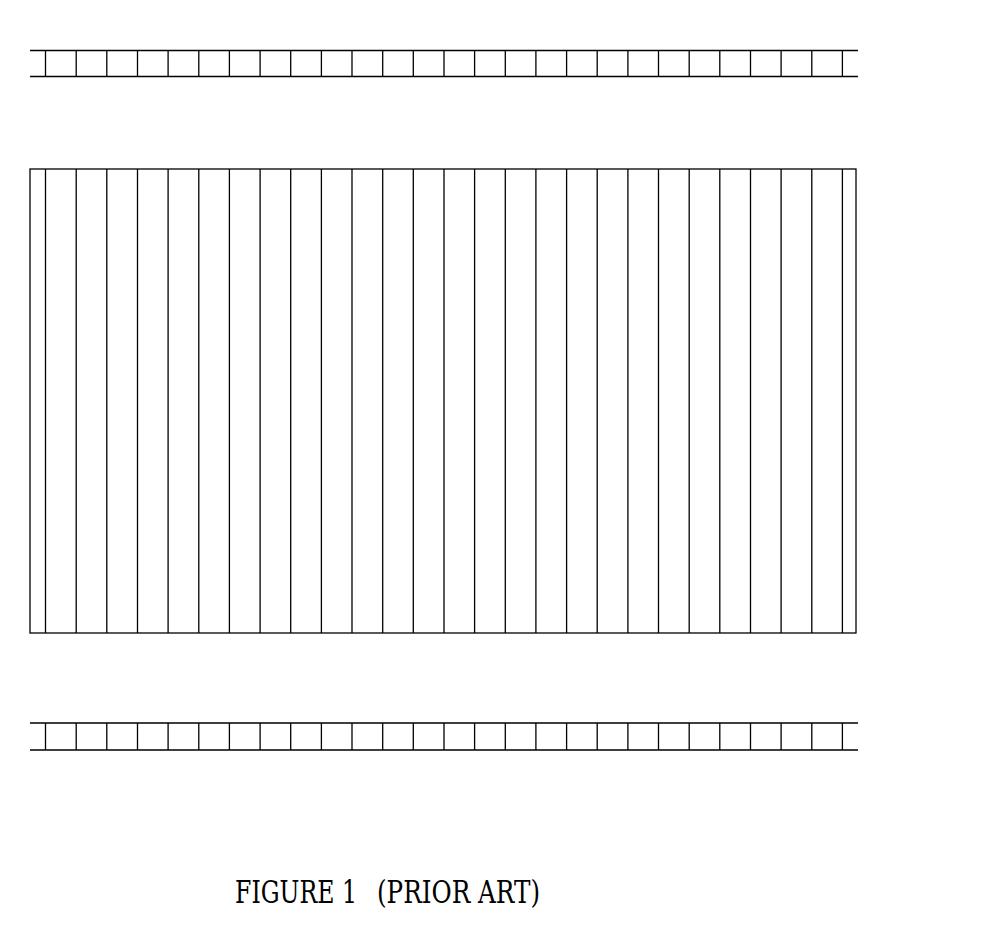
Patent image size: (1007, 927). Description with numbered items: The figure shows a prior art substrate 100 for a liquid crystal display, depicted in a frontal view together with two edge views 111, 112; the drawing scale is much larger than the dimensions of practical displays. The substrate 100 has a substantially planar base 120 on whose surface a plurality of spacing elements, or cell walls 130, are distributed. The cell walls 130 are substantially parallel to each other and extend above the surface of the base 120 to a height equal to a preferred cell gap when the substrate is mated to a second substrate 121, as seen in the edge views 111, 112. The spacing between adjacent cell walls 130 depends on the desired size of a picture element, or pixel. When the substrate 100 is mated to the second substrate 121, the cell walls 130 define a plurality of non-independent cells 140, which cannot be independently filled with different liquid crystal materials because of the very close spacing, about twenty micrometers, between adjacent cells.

The prior art substrate 100 is at (472, 401).
The edge view 111 is at (456, 51).
The edge view 112 is at (463, 711).
The substantially planar base 120 is at (109, 407).
The second substrate 121 is at (444, 399).
The cell walls 130 is at (153, 385).
The non-independent cells 140 is at (286, 385).